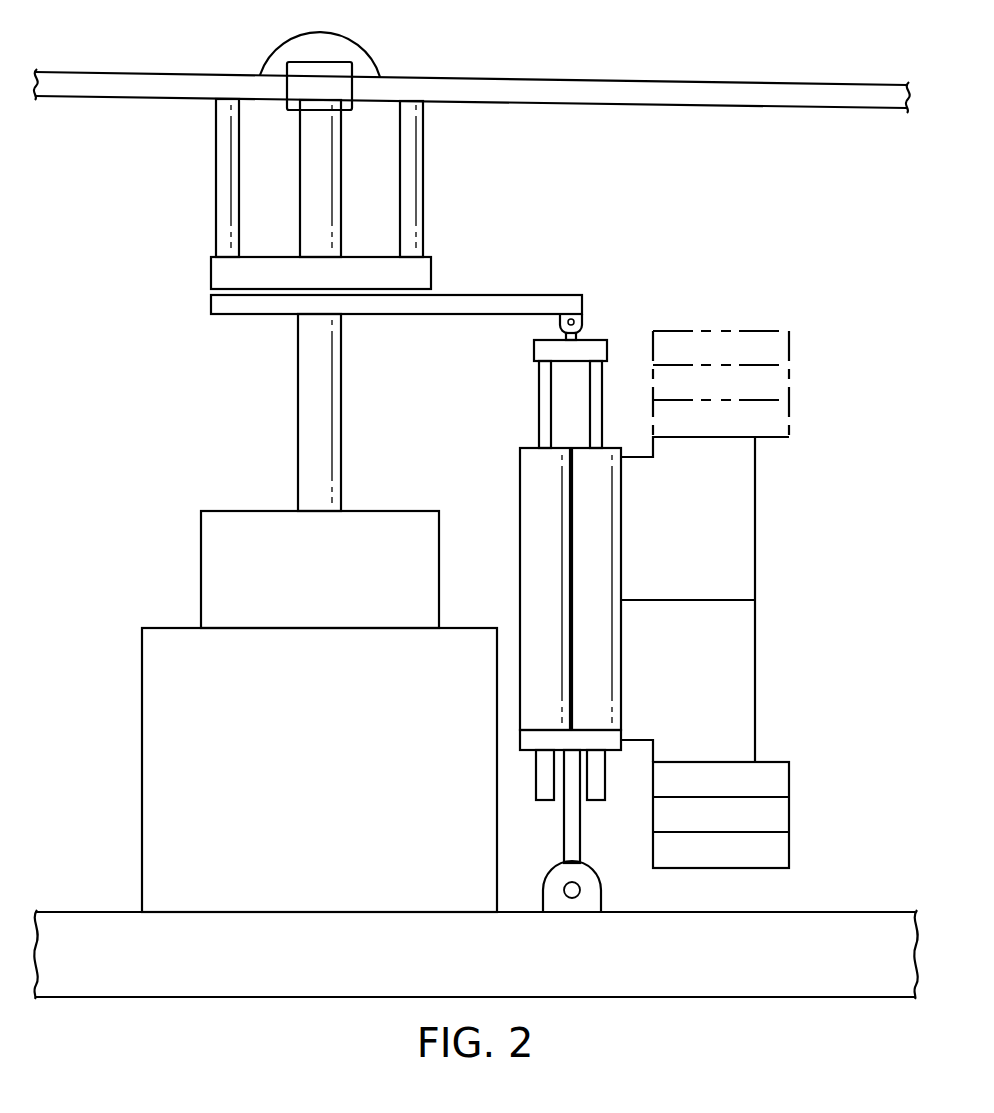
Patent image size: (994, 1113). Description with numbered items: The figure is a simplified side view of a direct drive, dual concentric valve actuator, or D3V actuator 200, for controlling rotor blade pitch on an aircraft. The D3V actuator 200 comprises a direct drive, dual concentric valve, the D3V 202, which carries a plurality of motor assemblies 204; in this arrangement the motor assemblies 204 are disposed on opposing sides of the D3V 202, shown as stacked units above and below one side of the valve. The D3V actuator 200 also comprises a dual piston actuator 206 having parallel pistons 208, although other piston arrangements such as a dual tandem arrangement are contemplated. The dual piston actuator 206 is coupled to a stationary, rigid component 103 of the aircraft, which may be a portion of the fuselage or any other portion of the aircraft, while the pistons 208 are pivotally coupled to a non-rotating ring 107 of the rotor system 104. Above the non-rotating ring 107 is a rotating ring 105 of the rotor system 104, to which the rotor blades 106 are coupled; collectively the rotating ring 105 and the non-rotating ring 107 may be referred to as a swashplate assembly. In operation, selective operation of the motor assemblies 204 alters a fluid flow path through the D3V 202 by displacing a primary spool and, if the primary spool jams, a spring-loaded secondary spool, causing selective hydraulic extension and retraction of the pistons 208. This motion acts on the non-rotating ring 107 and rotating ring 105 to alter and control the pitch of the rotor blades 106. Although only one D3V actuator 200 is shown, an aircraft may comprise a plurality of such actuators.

The stationary, rigid component 103 is at (260, 1000).
The rotor system 104 is at (456, 197).
The rotating ring 105 is at (218, 271).
The rotor blades 106 is at (164, 73).
The non-rotating ring 107 is at (508, 294).
The D3V actuator 200 is at (808, 233).
The direct drive, dual concentric valve 202 is at (757, 561).
The motor assemblies 204 is at (793, 347).
The dual piston actuator 206 is at (519, 497).
The parallel pistons 208 is at (604, 377).